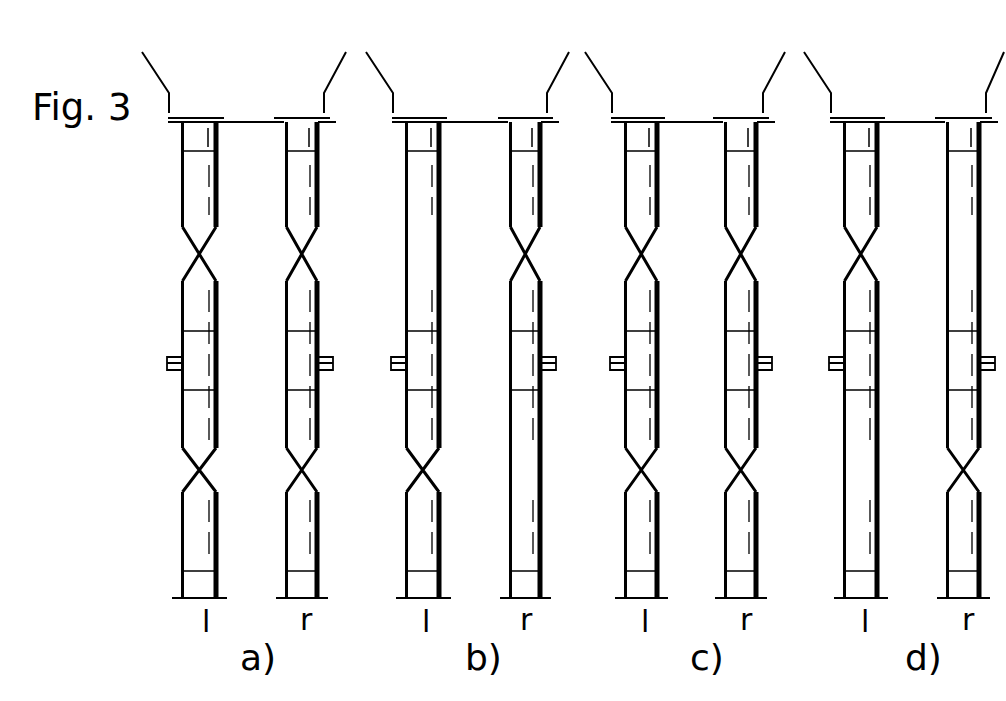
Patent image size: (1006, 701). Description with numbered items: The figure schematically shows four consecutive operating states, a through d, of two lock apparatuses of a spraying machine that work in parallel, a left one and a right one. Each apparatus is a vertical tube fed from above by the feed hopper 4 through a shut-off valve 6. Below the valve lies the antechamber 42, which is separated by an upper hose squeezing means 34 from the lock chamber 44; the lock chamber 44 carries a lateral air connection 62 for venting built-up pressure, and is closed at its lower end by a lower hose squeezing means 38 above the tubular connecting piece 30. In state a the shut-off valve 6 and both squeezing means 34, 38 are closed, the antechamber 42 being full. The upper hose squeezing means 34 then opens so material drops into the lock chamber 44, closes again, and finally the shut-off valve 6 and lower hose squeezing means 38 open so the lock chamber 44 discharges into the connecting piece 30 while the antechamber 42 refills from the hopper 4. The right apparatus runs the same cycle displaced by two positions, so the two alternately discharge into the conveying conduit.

The feed hopper 4 is at (154, 66).
The shut-off valve 6 is at (204, 120).
The antechamber 42 is at (207, 192).
The upper hose squeezing means 34 is at (203, 253).
The lock chamber 44 is at (205, 310).
The air connection 62 is at (167, 357).
The lower hose squeezing means 38 is at (207, 472).
The tubular connecting piece 30 is at (210, 585).